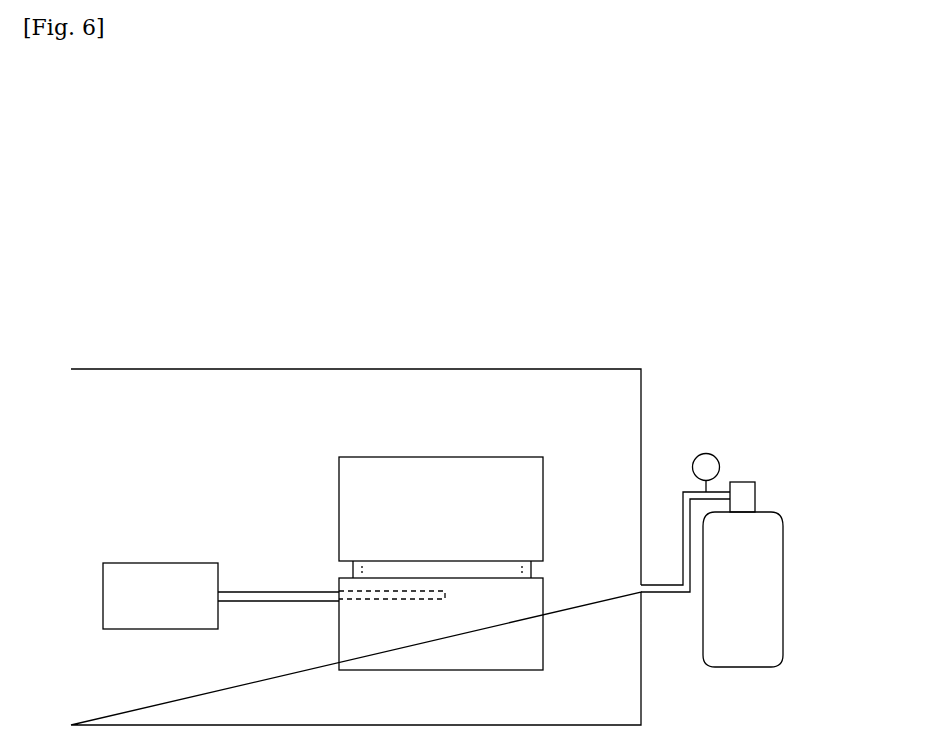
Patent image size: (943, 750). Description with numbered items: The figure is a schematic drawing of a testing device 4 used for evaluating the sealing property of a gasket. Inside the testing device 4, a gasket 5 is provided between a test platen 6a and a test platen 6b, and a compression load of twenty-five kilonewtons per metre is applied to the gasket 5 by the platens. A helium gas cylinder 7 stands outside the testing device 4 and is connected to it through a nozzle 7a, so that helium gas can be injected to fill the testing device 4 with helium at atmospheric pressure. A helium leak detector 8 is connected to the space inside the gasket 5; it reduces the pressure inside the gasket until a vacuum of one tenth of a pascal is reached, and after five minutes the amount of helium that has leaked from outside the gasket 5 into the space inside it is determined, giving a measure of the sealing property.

The testing device 4 is at (584, 377).
The gasket 5 is at (531, 569).
The test platen 6a is at (543, 487).
The test platen 6b is at (543, 639).
The helium gas cylinder 7 is at (773, 560).
The nozzle 7a is at (663, 593).
The helium leak detector 8 is at (130, 625).